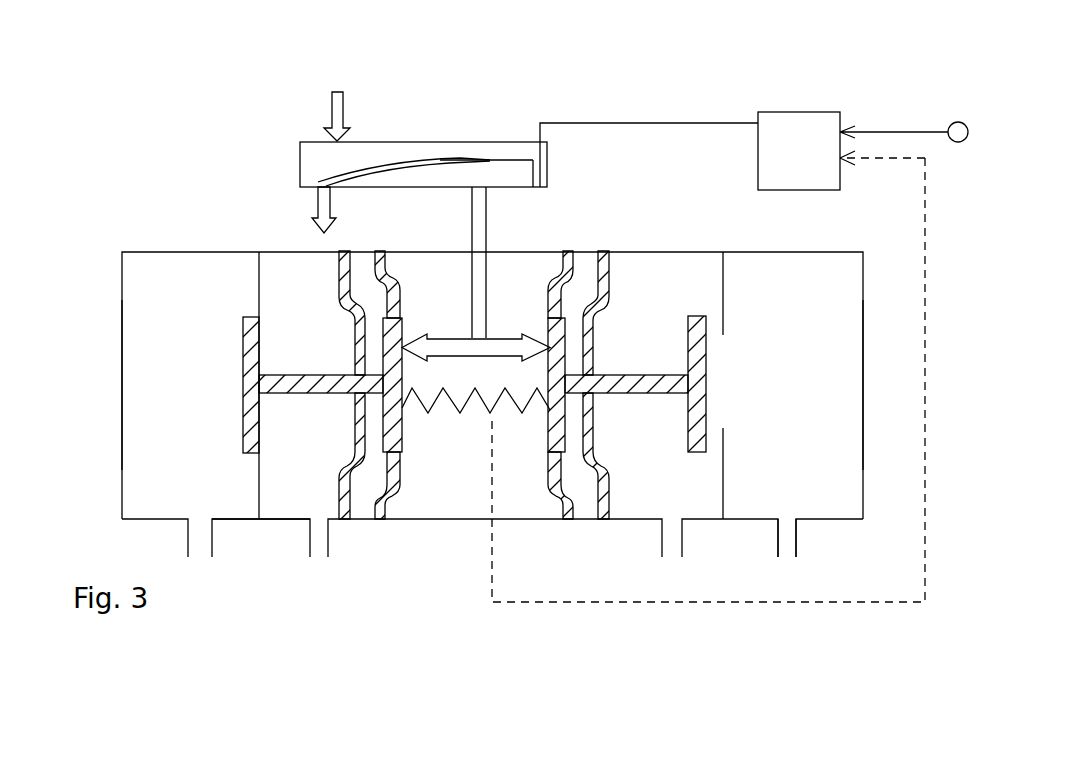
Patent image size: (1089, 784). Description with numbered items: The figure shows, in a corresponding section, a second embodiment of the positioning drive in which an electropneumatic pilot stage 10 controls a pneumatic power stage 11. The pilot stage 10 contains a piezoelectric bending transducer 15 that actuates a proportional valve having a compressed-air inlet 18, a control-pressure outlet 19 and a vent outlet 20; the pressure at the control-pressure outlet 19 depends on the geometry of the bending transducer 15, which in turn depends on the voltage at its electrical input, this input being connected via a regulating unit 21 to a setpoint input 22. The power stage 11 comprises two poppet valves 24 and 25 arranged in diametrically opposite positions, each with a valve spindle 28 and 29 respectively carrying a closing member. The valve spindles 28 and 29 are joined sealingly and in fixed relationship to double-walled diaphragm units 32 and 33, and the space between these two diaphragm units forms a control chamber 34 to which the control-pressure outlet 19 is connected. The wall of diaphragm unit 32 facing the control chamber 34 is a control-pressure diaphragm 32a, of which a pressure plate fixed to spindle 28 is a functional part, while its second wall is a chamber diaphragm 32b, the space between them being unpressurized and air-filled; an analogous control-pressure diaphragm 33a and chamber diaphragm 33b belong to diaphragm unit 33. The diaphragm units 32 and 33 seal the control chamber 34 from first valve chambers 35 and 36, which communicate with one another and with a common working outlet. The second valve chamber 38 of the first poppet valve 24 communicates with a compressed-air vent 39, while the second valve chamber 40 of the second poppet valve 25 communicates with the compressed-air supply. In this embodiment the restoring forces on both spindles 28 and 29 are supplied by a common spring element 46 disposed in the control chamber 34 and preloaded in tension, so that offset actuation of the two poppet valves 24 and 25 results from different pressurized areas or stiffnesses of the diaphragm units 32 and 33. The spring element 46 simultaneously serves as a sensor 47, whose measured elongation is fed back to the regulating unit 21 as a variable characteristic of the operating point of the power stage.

The electropneumatic pilot stage 10 is at (404, 107).
The pneumatic power stage 11 is at (893, 250).
The piezoelectric bending transducer 15 is at (423, 160).
The compressed-air inlet 18 is at (327, 105).
The control-pressure outlet 19 is at (495, 202).
The vent outlet 20 is at (313, 203).
The regulating unit 21 is at (812, 112).
The setpoint input 22 is at (960, 120).
The first poppet valve 24 is at (797, 314).
The second poppet valve 25 is at (236, 292).
The valve spindle 28 is at (667, 388).
The valve spindle 29 is at (303, 510).
The double-walled diaphragm unit 32 is at (592, 231).
The control-pressure diaphragm 32a is at (588, 505).
The chamber diaphragm 32b is at (612, 493).
The double-walled diaphragm unit 33 is at (360, 539).
The control-pressure diaphragm 33a is at (392, 505).
The chamber diaphragm 33b is at (350, 515).
The control chamber 34 is at (470, 507).
The first valve chamber 35 is at (643, 272).
The first valve chamber 36 is at (287, 273).
The second valve chamber 38 is at (845, 355).
The compressed-air vent 39 is at (790, 542).
The second valve chamber 40 is at (163, 302).
The common spring element 46 is at (518, 418).
The sensor 47 is at (451, 475).